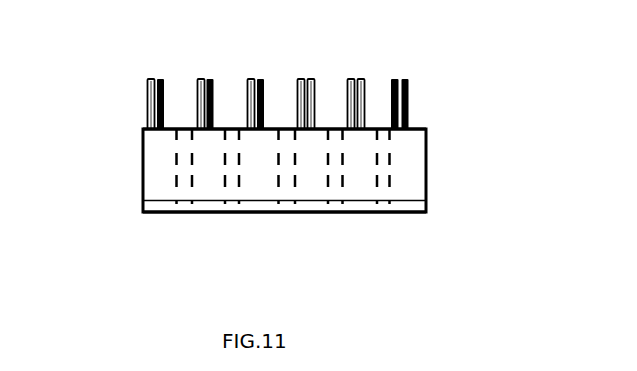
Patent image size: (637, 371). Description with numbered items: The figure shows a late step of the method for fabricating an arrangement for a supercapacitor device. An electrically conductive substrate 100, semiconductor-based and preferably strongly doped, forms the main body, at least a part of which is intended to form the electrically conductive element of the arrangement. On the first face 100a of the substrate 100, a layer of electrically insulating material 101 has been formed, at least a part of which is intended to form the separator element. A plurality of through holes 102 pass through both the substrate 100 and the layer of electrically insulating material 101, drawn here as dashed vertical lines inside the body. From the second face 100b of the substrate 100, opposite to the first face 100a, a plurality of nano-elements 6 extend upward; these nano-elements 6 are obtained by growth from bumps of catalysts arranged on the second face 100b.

The nano-elements 6 is at (147, 88).
The electrically conductive substrate 100 is at (153, 162).
The first face of the substrate 100a is at (354, 220).
The second face of the substrate 100b is at (232, 108).
The layer of electrically insulating material 101 is at (262, 203).
The through holes 102 is at (388, 165).